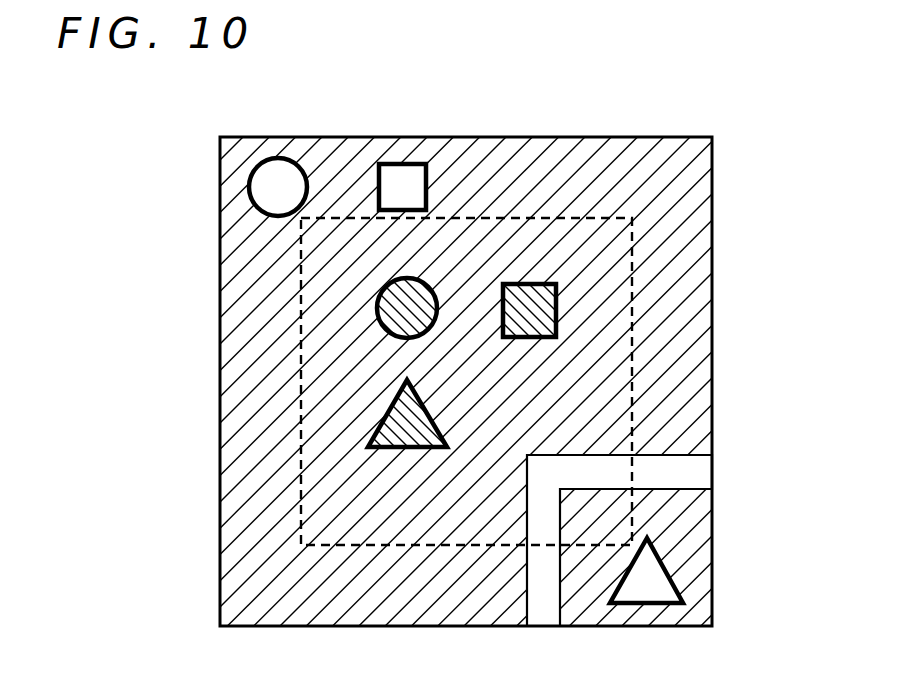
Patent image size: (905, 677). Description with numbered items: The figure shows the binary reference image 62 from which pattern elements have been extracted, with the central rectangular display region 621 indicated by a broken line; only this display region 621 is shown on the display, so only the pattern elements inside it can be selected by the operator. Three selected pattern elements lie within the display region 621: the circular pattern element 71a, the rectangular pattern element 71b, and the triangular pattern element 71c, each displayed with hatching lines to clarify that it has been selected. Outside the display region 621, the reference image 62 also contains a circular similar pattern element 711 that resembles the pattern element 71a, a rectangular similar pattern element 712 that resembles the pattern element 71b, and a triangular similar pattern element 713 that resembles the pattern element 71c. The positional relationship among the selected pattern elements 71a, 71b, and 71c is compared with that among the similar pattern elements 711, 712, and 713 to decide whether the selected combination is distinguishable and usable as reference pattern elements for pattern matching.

The reference image 62 is at (483, 137).
The display region 621 is at (633, 397).
The similar pattern element 711 is at (277, 185).
The similar pattern element 712 is at (400, 170).
The similar pattern element 713 is at (652, 573).
The pattern element 71a is at (405, 311).
The pattern element 71b is at (535, 311).
The pattern element 71c is at (407, 422).